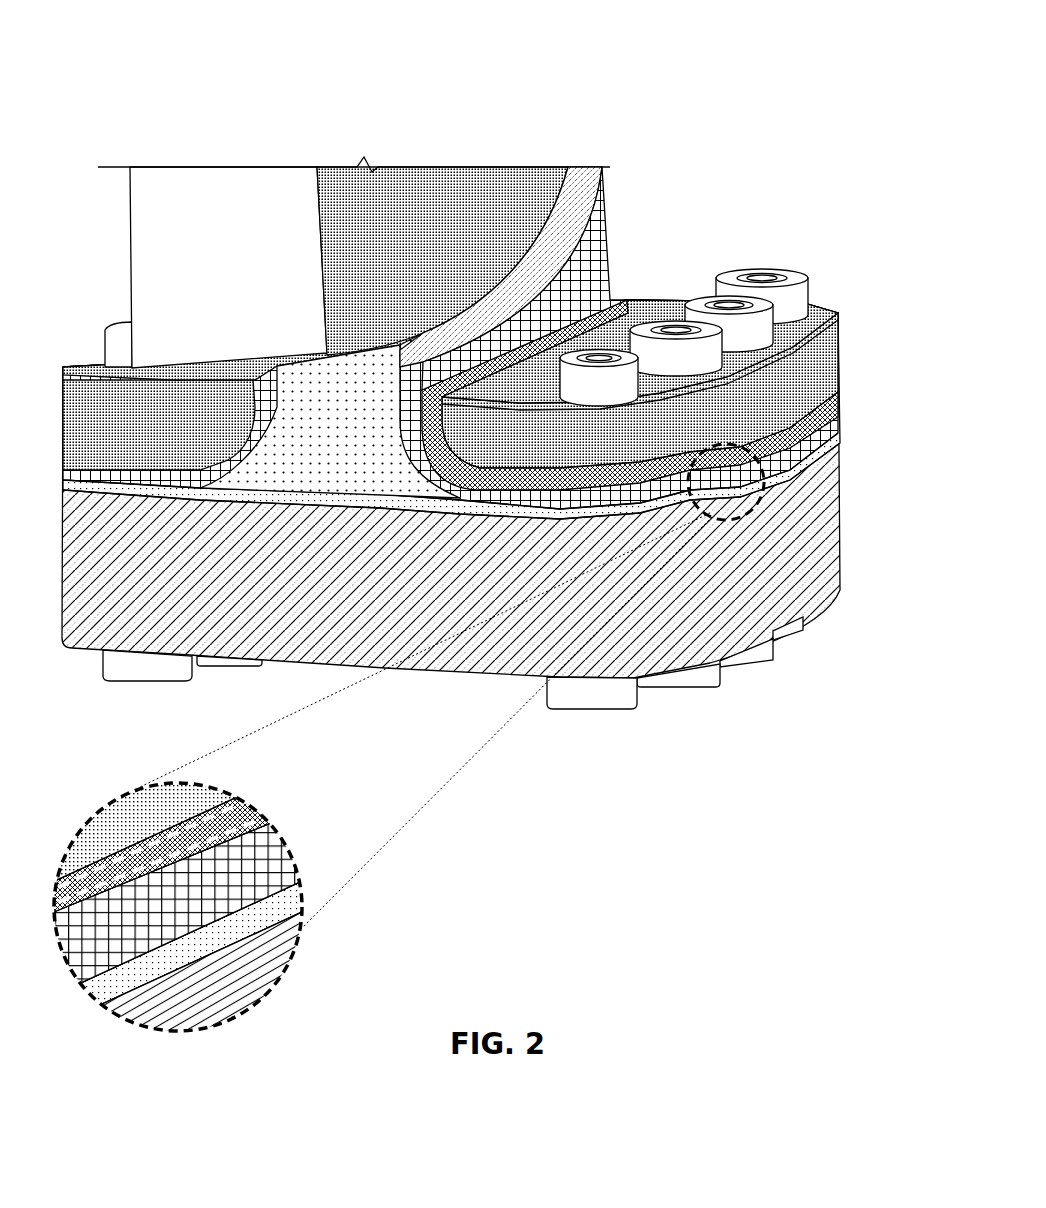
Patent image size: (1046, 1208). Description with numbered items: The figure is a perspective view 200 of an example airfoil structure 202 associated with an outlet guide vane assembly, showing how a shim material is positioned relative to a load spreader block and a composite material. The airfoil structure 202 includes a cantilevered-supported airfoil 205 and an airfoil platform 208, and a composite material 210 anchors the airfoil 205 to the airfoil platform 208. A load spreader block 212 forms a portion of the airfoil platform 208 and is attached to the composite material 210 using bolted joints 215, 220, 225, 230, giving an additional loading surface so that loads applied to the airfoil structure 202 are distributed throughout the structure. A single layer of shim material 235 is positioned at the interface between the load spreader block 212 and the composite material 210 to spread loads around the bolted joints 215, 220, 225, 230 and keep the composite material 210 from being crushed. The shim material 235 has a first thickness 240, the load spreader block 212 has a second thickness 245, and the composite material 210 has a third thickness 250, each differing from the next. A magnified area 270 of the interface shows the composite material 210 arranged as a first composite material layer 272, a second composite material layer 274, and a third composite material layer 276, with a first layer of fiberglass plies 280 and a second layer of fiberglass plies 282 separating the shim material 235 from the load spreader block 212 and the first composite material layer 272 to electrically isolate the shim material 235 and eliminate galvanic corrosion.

The perspective view 200 is at (186, 52).
The airfoil structure 202 is at (565, 115).
The airfoil 205 is at (636, 204).
The airfoil platform 208 is at (794, 219).
The composite material 210 is at (308, 460).
The load spreader block 212 is at (836, 312).
The bolted joint 215 is at (126, 330).
The bolted joint 220 is at (722, 343).
The bolted joint 225 is at (770, 305).
The bolted joint 230 is at (795, 268).
The shim material 235 is at (636, 298).
The first thickness 240 is at (858, 393).
The second thickness 245 is at (858, 345).
The third thickness 250 is at (848, 315).
The magnified area 270 is at (303, 754).
The first composite material layer 272 is at (278, 860).
The second composite material layer 274 is at (295, 900).
The third composite material layer 276 is at (304, 946).
The first layer of fiberglass plies 280 is at (62, 878).
The second layer of fiberglass plies 282 is at (63, 915).